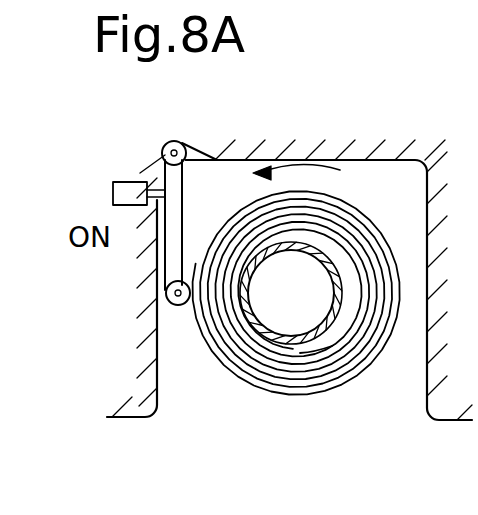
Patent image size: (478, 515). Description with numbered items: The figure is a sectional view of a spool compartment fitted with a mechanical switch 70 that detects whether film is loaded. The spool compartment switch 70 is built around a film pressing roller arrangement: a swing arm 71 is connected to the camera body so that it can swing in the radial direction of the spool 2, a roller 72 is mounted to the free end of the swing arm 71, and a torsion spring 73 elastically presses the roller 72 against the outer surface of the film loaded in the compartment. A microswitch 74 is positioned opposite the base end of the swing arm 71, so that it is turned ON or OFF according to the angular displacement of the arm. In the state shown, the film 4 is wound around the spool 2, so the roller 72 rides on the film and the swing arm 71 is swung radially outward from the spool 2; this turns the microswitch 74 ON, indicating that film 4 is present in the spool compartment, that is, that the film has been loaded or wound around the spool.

The spool 2 is at (287, 348).
The film 4 is at (327, 363).
The mechanical switch 70 is at (342, 158).
The swing arm 71 is at (178, 213).
The roller 72 is at (170, 308).
The torsion spring 73 is at (198, 147).
The microswitch 74 is at (126, 195).